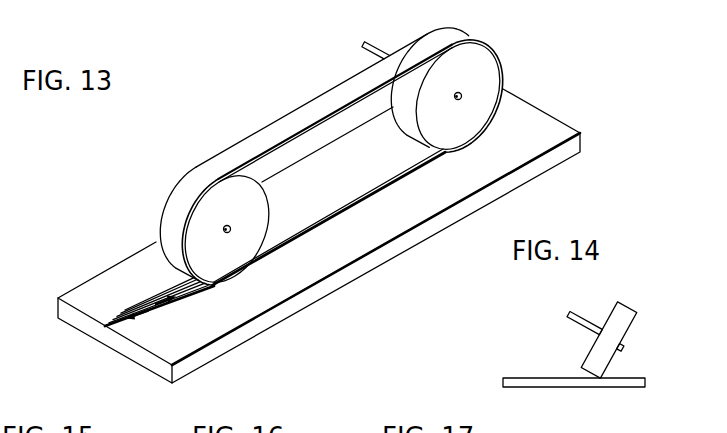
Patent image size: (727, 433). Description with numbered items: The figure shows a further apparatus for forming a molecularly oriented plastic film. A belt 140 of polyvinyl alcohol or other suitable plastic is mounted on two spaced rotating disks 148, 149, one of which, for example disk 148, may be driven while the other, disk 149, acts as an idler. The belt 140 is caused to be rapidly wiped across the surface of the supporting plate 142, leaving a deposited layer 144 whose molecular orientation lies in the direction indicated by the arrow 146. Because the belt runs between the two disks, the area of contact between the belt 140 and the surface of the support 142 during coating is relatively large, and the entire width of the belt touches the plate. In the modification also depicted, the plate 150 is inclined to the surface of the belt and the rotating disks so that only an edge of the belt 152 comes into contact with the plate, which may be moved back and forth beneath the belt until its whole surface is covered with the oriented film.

In FIG. 13, the belt 140 is at (303, 110).
In FIG. 13, the supporting plate 142 is at (553, 125).
In FIG. 13, the deposited layer 144 is at (188, 294).
In FIG. 13, the arrow 146 is at (153, 302).
In FIG. 13, the rotating disk 148 is at (492, 72).
In FIG. 13, the rotating disk 149 is at (205, 210).
In FIG. 14, the plate 150 is at (527, 380).
In FIG. 14, the edge of the belt 152 is at (601, 378).